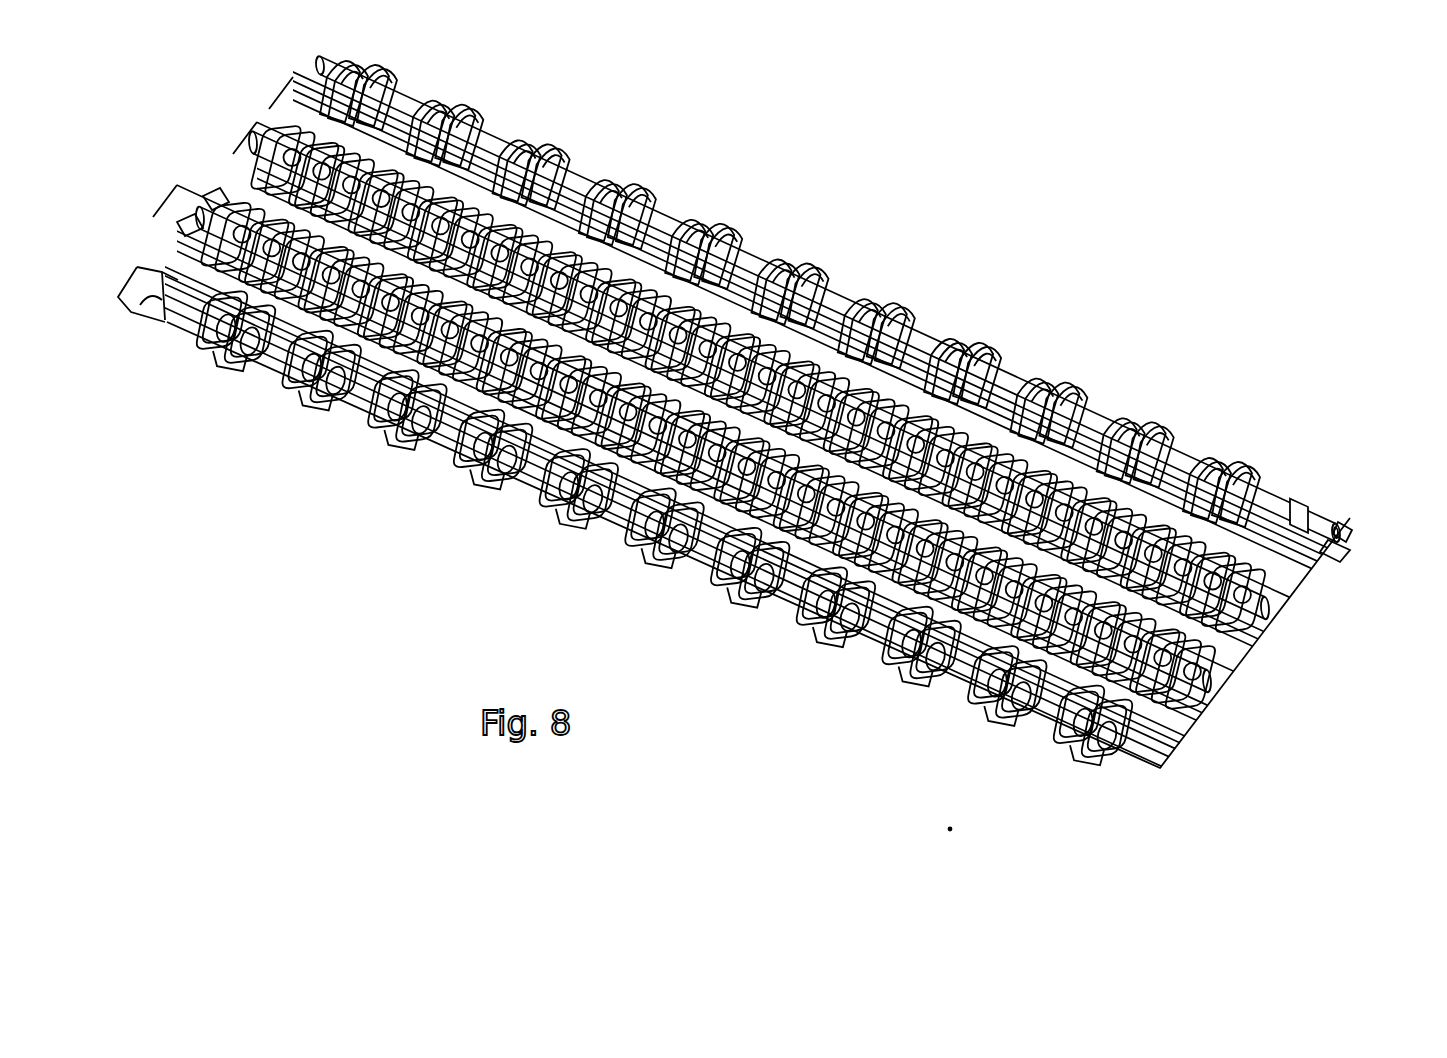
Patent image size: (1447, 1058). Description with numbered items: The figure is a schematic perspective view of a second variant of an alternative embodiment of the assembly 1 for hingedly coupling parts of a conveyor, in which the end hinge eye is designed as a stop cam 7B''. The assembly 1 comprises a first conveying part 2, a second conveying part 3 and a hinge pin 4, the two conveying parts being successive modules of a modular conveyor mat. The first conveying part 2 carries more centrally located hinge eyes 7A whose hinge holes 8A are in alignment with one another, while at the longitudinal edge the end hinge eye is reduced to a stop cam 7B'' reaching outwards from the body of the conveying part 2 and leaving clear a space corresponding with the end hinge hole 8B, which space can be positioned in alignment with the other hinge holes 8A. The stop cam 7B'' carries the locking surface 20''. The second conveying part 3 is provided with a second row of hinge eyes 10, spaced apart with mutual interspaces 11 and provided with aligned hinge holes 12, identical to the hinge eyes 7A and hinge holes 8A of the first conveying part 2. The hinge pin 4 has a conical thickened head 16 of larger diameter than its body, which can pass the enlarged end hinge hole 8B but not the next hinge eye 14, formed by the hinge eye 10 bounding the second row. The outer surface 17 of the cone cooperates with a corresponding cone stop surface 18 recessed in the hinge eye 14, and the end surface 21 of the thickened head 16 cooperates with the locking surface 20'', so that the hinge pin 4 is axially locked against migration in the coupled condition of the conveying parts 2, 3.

The assembly 1 is at (836, 239).
The first conveying part 2 is at (1310, 577).
The second conveying part 3 is at (1250, 653).
The hinge pin 4 is at (1097, 427).
The more centrally located hinge eyes 7A is at (1155, 437).
The stop cam 7B'' is at (819, 310).
The hinge holes 8A is at (985, 387).
The enlarged hinge hole 8B is at (190, 220).
The hinge eyes 10 is at (1003, 693).
The mutual interspaces 11 is at (787, 606).
The hinge holes 12 is at (848, 627).
The next hinge eye 14 is at (1272, 592).
The thickened head 16 is at (1299, 500).
The outer surface 17 is at (1304, 516).
The cone stop surface 18 is at (1208, 582).
The locking surface 20'' is at (140, 255).
The end surface 21 is at (1346, 527).